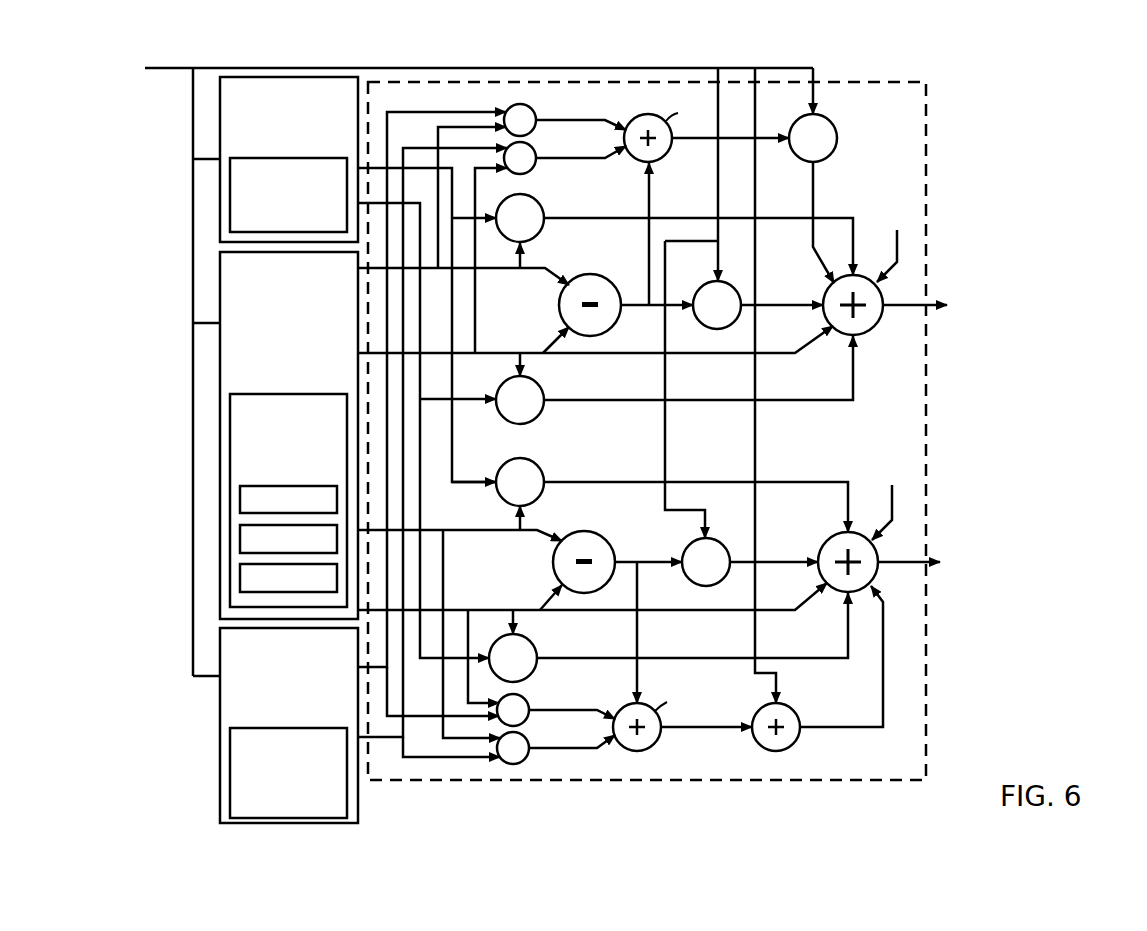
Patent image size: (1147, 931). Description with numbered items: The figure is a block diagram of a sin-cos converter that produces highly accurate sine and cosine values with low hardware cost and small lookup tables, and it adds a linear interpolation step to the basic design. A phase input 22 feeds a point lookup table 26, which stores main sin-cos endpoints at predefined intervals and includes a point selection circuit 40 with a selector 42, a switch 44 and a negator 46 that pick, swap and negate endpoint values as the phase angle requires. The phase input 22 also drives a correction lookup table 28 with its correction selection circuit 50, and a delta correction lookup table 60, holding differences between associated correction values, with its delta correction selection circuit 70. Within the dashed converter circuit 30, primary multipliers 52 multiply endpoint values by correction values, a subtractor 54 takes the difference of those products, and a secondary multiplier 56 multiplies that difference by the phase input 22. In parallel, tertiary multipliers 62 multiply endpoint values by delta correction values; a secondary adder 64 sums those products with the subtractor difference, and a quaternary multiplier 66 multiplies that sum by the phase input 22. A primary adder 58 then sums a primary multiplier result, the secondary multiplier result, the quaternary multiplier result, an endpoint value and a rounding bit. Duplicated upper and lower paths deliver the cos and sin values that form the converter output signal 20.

The converter output signal 20 is at (988, 305).
The phase input 22 is at (145, 68).
The point lookup table 26 is at (220, 293).
The correction lookup table 28 is at (220, 112).
The converter circuit 30 is at (926, 135).
The point selection circuit 40 is at (230, 440).
The selector 42 is at (240, 500).
The switch 44 is at (240, 541).
The negator 46 is at (240, 580).
The correction selection circuit 50 is at (230, 197).
The primary multiplier 52 is at (500, 200).
The subtractor 54 is at (590, 336).
The secondary multiplier 56 is at (717, 330).
The primary adder 58 is at (875, 326).
The delta correction lookup table 60 is at (220, 703).
The tertiary multiplier 62 is at (520, 104).
The secondary adder 64 is at (655, 118).
The quaternary multiplier 66 is at (830, 118).
The delta correction selection circuit 70 is at (230, 772).